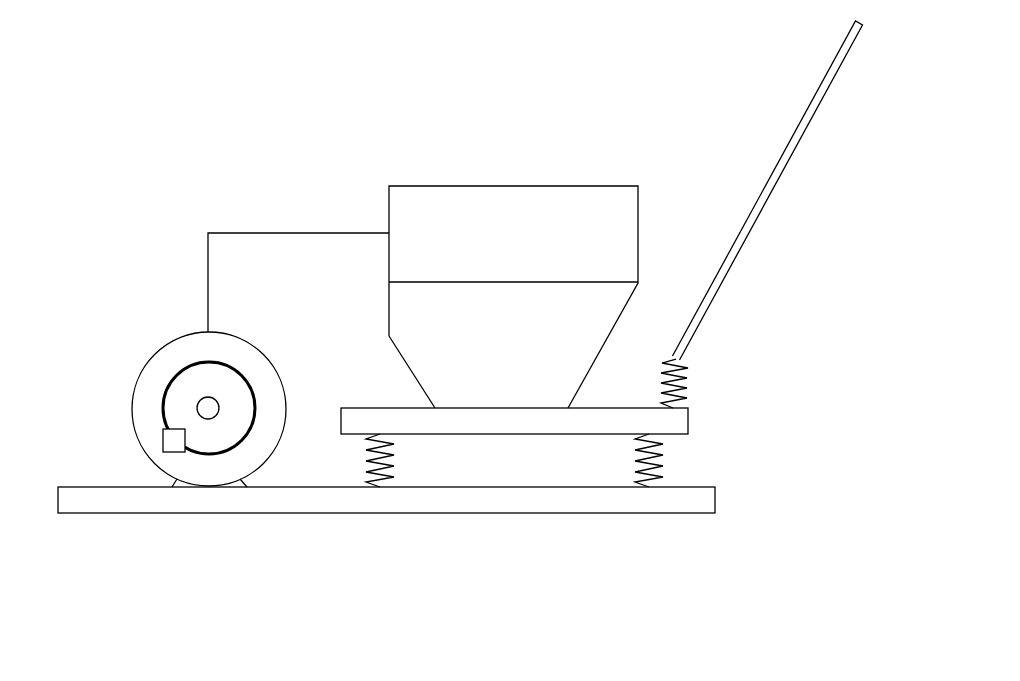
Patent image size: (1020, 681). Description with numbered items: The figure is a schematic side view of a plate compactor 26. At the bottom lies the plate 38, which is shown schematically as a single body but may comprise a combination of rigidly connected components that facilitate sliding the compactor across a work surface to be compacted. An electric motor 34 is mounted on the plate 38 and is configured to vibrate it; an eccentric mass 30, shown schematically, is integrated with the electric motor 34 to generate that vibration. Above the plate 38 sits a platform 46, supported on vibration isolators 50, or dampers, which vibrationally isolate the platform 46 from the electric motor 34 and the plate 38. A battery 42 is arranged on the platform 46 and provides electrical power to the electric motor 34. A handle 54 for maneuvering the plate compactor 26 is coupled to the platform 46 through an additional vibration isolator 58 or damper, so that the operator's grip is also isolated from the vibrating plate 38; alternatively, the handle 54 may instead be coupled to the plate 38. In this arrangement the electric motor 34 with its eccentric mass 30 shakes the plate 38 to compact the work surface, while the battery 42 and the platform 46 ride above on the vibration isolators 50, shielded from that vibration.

The plate compactor 26 is at (211, 128).
The eccentric mass 30 is at (165, 443).
The electric motor 34 is at (162, 322).
The plate 38 is at (697, 503).
The battery 42 is at (397, 185).
The platform 46 is at (688, 422).
The vibration isolators 50 is at (662, 463).
The handle 54 is at (778, 165).
The additional vibration isolator 58 is at (682, 363).